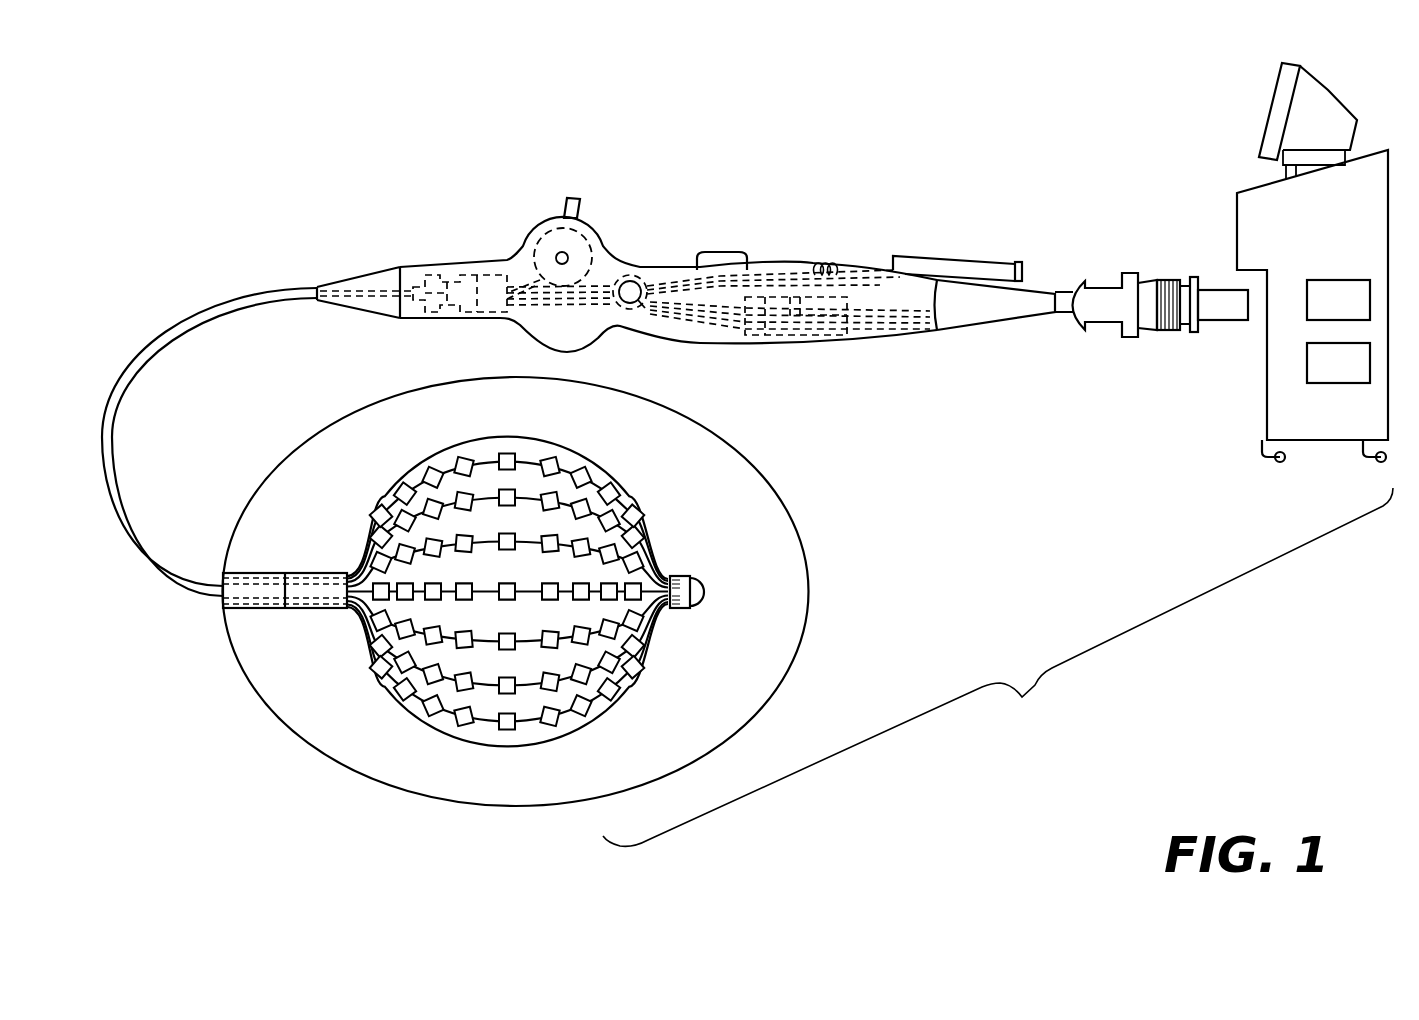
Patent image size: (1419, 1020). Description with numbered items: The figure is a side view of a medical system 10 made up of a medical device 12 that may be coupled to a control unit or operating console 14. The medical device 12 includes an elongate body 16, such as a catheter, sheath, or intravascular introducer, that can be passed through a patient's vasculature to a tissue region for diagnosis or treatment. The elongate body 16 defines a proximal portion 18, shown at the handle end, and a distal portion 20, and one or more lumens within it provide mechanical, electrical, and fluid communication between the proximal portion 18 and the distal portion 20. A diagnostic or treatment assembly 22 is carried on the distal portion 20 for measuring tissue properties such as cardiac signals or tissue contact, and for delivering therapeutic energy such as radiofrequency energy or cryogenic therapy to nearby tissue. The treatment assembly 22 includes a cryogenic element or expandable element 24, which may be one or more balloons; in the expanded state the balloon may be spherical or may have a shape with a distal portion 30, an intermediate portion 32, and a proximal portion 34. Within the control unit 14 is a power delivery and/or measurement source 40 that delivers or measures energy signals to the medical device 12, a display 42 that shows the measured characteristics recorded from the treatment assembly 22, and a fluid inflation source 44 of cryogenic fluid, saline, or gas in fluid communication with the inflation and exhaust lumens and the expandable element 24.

The system 10 is at (998, 667).
The medical device 12 is at (368, 132).
The control unit 14 is at (1352, 229).
The elongate body 16 is at (165, 322).
The proximal portion 18 is at (317, 287).
The distal portion 20 is at (772, 477).
The treatment assembly 22 is at (578, 453).
The expandable element 24 is at (615, 691).
The distal portion 30 is at (710, 602).
The intermediate portion 32 is at (498, 745).
The proximal portion 34 is at (322, 613).
The power delivery and/or measurement source 40 is at (1352, 317).
The display 42 is at (1278, 85).
The fluid inflation source 44 is at (1352, 380).